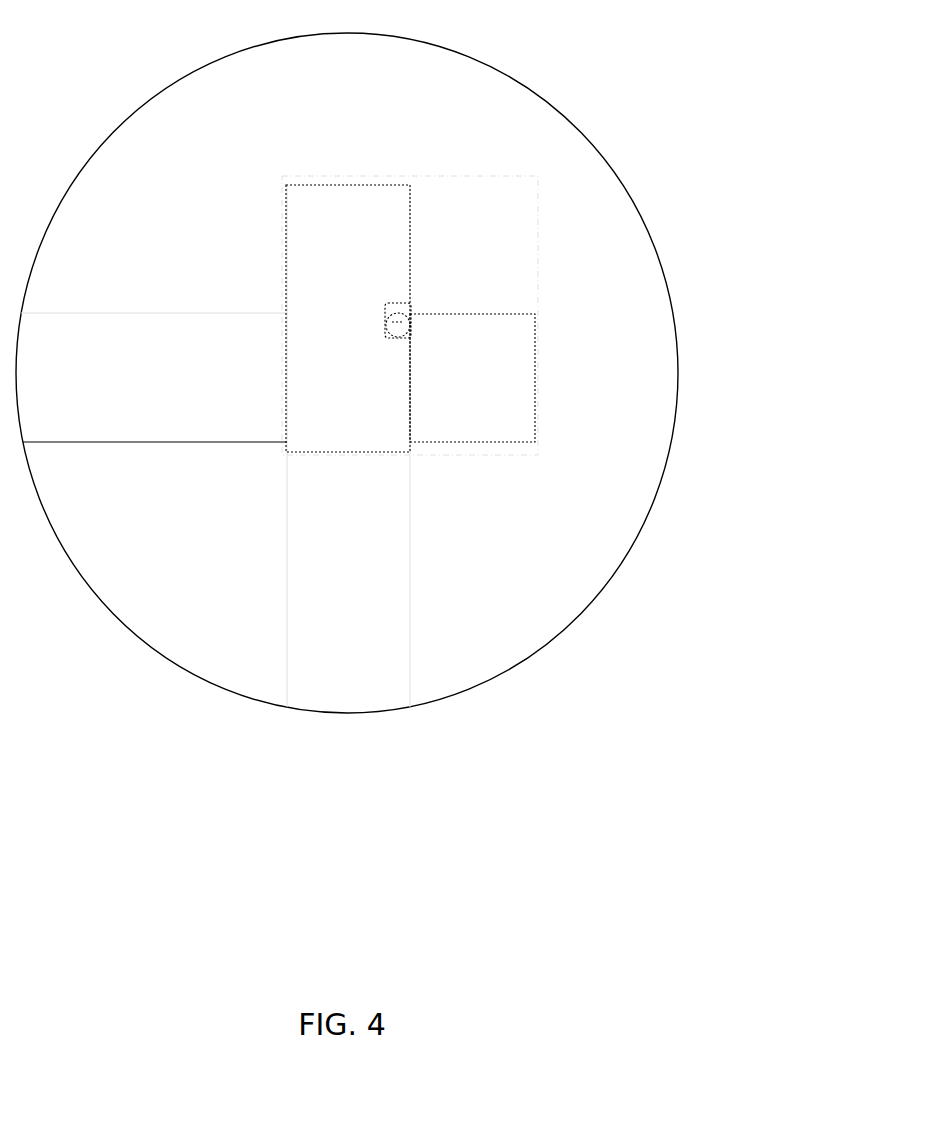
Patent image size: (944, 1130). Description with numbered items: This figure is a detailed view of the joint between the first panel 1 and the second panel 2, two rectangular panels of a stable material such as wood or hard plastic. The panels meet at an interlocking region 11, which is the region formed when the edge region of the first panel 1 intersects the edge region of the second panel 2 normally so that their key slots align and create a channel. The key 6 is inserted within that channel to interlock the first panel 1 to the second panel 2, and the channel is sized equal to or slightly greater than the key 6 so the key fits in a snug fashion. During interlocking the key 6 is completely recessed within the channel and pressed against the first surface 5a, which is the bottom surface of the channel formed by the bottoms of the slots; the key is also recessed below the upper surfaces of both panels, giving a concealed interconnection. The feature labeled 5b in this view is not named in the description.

The first panel 1 is at (390, 568).
The second panel 2 is at (203, 326).
The first surface of the channel 5a is at (398, 303).
The contact point 5b is at (380, 336).
The key 6 is at (392, 322).
The interlocking region 11 is at (488, 170).